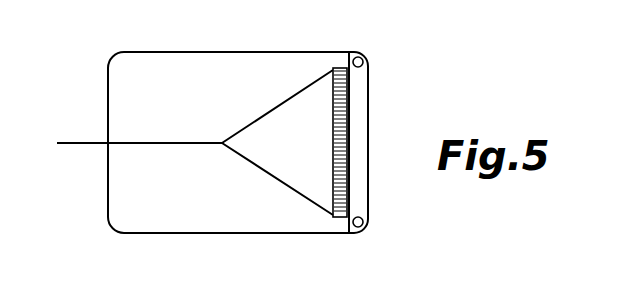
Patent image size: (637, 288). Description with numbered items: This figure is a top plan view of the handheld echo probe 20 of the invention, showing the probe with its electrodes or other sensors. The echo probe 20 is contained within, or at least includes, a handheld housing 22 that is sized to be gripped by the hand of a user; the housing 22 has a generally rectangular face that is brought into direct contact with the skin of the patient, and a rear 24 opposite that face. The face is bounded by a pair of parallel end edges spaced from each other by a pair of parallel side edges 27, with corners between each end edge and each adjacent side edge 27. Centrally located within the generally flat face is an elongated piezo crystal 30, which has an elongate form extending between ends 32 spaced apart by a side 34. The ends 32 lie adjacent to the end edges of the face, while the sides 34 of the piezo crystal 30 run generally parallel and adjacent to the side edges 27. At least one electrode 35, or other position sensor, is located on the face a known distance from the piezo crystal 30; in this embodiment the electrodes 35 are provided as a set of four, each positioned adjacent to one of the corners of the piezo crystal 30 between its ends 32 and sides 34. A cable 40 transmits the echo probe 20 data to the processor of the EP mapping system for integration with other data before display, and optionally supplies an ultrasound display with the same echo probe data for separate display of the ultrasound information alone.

The echo probe 20 is at (108, 43).
The handheld housing 22 is at (198, 106).
The rear 24 is at (108, 97).
The side edges 27 is at (368, 197).
The piezo crystal 30 is at (349, 115).
The ends 32 is at (338, 66).
The side 34 is at (333, 162).
The electrode 35 is at (363, 62).
The cable 40 is at (75, 143).